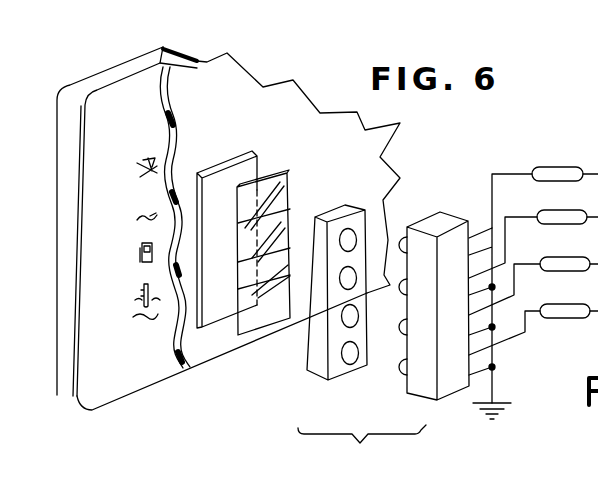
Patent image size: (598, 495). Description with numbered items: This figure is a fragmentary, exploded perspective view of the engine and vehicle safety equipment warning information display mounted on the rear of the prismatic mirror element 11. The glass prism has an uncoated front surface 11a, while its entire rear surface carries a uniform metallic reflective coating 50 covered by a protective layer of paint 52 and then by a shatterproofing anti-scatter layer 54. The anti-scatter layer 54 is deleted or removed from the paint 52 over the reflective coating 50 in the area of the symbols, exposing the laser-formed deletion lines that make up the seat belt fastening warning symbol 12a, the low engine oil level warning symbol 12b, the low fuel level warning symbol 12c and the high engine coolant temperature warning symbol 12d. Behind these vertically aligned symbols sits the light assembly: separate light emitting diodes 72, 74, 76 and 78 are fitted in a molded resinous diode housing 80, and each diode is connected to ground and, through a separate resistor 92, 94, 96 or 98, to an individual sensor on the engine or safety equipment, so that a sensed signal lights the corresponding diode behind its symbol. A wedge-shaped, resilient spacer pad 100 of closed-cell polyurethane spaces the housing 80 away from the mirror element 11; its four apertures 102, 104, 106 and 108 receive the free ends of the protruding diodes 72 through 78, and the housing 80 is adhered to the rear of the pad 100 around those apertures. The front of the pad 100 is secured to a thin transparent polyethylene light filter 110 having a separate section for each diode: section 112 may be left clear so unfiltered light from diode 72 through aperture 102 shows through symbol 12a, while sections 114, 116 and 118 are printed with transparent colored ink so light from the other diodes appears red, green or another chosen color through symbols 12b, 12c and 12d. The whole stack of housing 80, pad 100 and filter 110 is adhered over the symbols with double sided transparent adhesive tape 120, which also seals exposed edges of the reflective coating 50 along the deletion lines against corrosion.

The prismatic mirror element 11 is at (68, 97).
The uncoated front surface 11a is at (52, 170).
The seat belt fastening warning symbol 12a is at (140, 177).
The low engine oil level warning symbol 12b is at (140, 218).
The low fuel level warning symbol 12c is at (142, 252).
The high engine coolant temperature warning symbol 12d is at (143, 290).
The reflective coating 50 is at (77, 365).
The layer of paint 52 is at (137, 377).
The anti-scatter layer 54 is at (228, 90).
The light emitting diode 72 is at (421, 306).
The light emitting diode 74 is at (400, 292).
The light emitting diode 76 is at (400, 328).
The light emitting diode 78 is at (399, 378).
The diode housing 80 is at (467, 220).
The resistor 92 is at (562, 172).
The resistor 94 is at (557, 211).
The resistor 96 is at (563, 257).
The resistor 98 is at (574, 304).
The spacer pad 100 is at (356, 280).
The aperture 102 is at (353, 237).
The aperture 104 is at (355, 273).
The aperture 106 is at (350, 317).
The aperture 108 is at (355, 353).
The light filter 110 is at (264, 258).
The transparent section 112 is at (287, 190).
The colored filter section 114 is at (240, 241).
The colored filter section 116 is at (245, 290).
The colored filter section 118 is at (262, 330).
The double sided transparent adhesive tape 120 is at (238, 133).